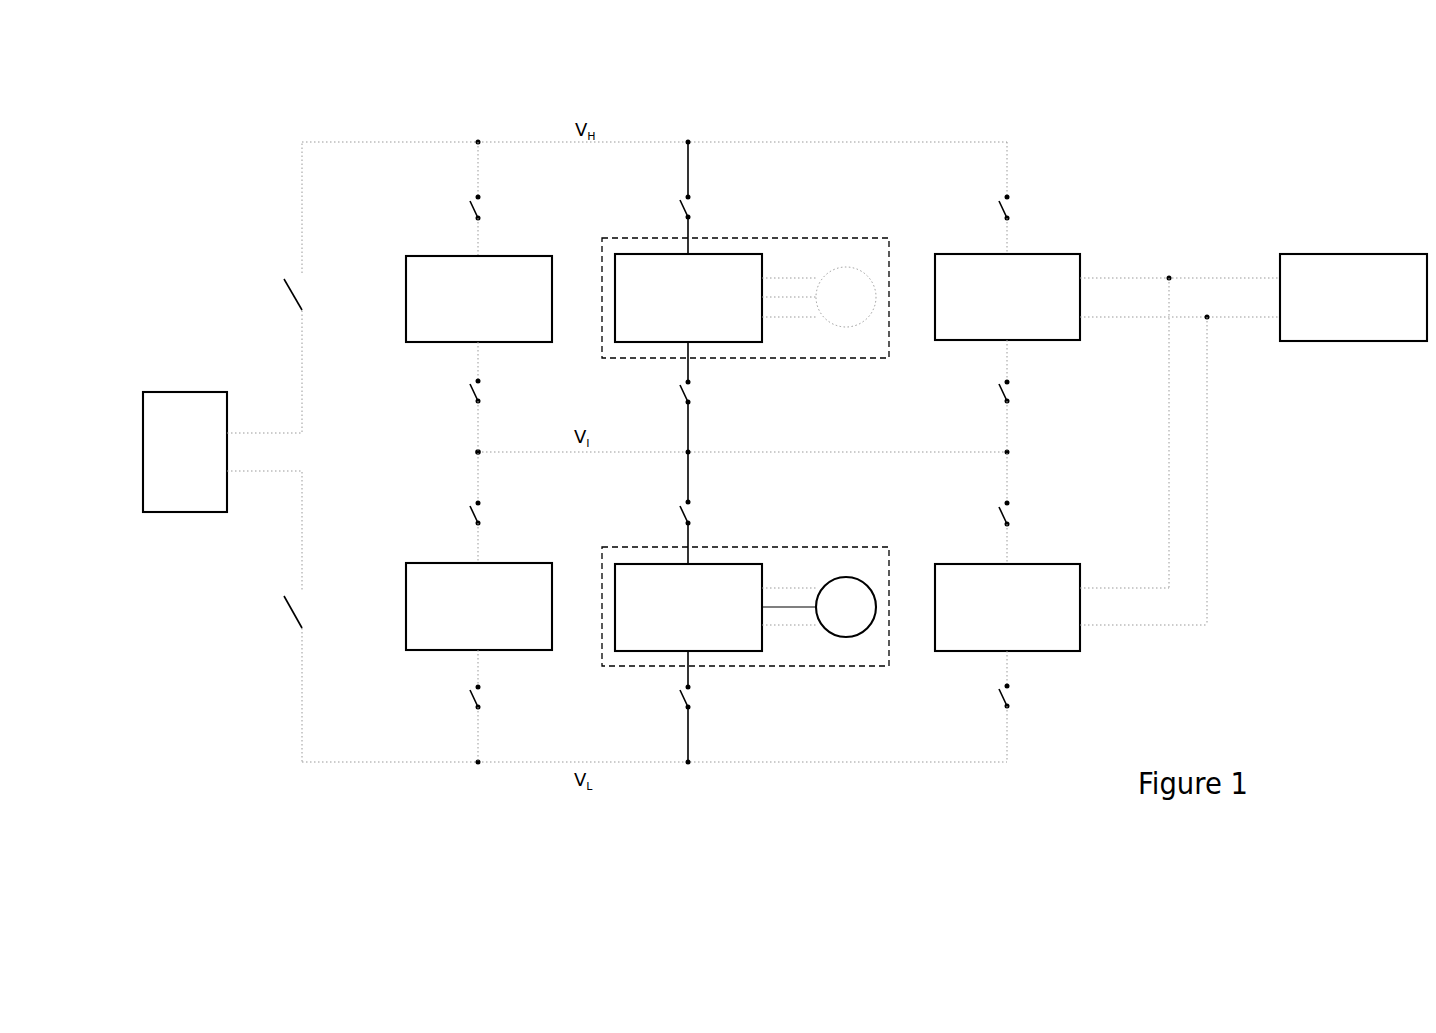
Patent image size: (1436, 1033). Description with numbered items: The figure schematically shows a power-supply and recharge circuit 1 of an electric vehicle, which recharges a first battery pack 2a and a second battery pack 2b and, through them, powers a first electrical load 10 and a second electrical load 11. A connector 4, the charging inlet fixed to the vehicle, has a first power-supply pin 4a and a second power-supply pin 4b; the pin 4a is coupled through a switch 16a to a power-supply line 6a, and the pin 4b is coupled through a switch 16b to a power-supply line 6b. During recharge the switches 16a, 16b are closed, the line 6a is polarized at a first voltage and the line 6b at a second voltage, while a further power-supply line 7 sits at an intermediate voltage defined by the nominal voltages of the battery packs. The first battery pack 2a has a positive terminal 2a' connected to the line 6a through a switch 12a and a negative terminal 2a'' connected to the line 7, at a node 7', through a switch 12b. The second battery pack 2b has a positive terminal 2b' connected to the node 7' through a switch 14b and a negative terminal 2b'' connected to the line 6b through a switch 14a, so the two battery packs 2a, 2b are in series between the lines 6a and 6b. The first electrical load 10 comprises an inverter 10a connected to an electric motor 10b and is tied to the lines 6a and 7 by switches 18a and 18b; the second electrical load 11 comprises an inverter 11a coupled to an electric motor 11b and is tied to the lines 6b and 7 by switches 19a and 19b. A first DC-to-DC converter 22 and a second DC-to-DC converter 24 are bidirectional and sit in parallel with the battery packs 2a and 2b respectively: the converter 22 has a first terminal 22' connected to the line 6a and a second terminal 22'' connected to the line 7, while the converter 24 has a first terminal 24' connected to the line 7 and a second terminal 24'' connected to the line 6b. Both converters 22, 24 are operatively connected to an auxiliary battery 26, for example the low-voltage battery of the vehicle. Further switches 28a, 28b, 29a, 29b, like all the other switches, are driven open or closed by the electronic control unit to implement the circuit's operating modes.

The power-supply and recharge circuit 1 is at (240, 145).
The first battery pack 2a is at (451, 289).
The positive terminal of first battery pack 2a' is at (492, 234).
The negative terminal of first battery pack 2a'' is at (496, 363).
The second battery pack 2b is at (449, 606).
The positive terminal of second battery pack 2b' is at (490, 540).
The negative terminal of second battery pack 2b'' is at (498, 680).
The connector 4 is at (165, 392).
The first power-supply pin 4a is at (227, 433).
The second power-supply pin 4b is at (227, 471).
The power-supply line 6a is at (387, 142).
The power-supply line 6b is at (386, 763).
The further power-supply line 7 is at (744, 432).
The node 7' is at (454, 442).
The first electrical load 10 is at (745, 238).
The inverter 10a is at (633, 262).
The electric motor 10b is at (840, 275).
The second electrical load 11 is at (715, 668).
The inverter 11a is at (635, 575).
The electric motor 11b is at (848, 637).
The switch 12a is at (470, 205).
The switch 12b is at (470, 389).
The switch 14a is at (470, 692).
The switch 14b is at (470, 508).
The switch 16a is at (292, 298).
The switch 16b is at (290, 612).
The switch 18a is at (680, 204).
The switch 18b is at (680, 389).
The switch 19a is at (680, 694).
The switch 19b is at (680, 509).
The first DC-to-DC converter 22 is at (1107, 426).
The first terminal of first converter 22' is at (1033, 227).
The second terminal of first converter 22'' is at (1034, 366).
The second DC-to-DC converter 24 is at (1071, 621).
The first terminal of second converter 24' is at (1031, 542).
The second terminal of second converter 24'' is at (1034, 675).
The auxiliary battery 26 is at (1325, 257).
The switch 28a is at (999, 205).
The switch 28b is at (999, 389).
The switch 29a is at (999, 692).
The switch 29b is at (999, 508).